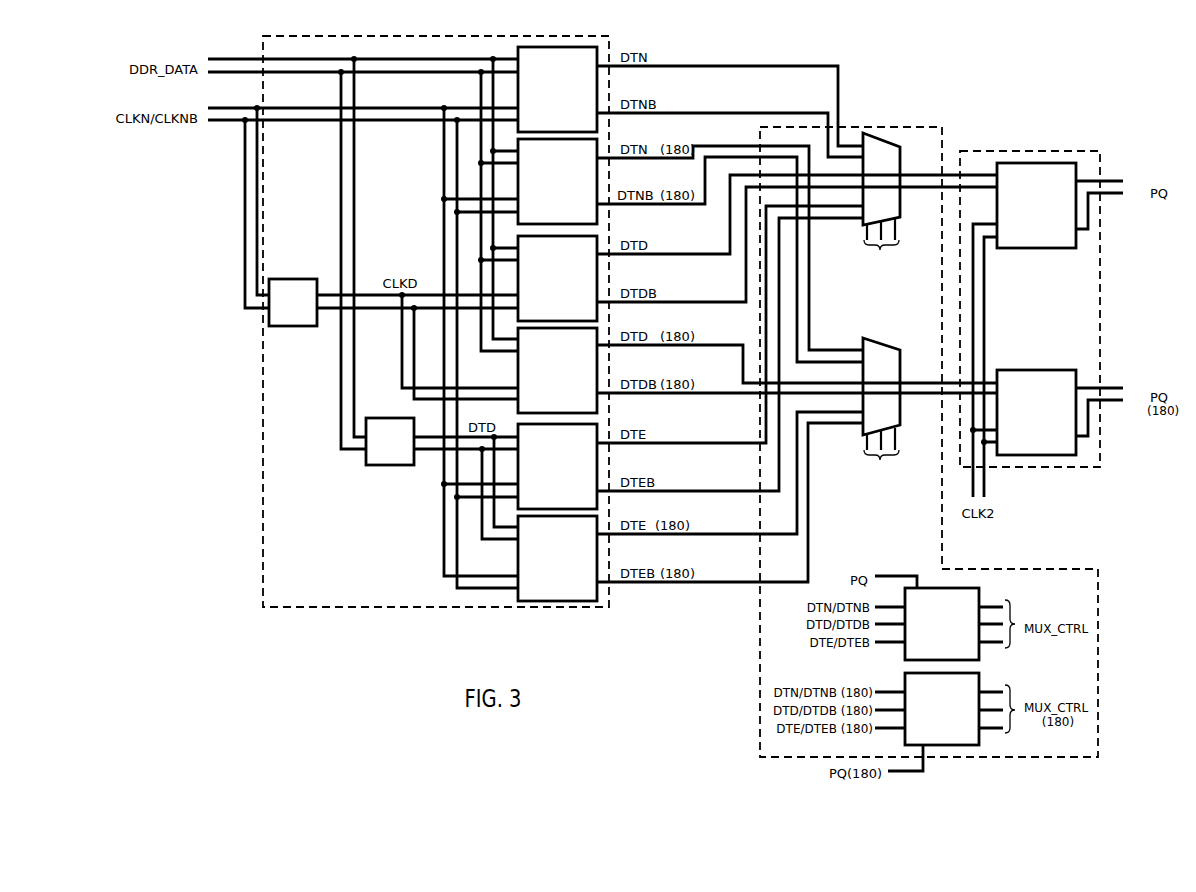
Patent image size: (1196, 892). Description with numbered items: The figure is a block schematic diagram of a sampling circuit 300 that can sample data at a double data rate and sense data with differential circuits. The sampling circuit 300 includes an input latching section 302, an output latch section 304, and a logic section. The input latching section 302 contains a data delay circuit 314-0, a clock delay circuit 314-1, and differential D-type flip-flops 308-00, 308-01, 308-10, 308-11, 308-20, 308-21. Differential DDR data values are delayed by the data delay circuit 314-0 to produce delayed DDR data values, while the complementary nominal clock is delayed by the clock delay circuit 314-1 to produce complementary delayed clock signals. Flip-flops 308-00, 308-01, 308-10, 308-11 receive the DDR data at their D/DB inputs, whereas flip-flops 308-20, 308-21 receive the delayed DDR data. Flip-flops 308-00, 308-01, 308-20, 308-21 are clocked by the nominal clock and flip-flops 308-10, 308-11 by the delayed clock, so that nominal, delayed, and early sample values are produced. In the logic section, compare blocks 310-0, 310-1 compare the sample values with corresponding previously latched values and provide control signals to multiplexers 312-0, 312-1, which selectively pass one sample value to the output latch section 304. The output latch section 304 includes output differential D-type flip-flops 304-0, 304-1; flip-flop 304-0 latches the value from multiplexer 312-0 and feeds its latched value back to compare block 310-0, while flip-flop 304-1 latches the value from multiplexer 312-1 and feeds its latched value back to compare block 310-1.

The sampling circuit 300 is at (1002, 69).
The input latching section 302 is at (263, 401).
The output latch section 304 is at (1033, 151).
The output differential D-type FF 304-0 is at (1036, 205).
The output differential D-type FF 304-1 is at (1036, 412).
The differential D-type FF 308-00 is at (557, 89).
The differential D-type FF 308-01 is at (557, 181).
The differential D-type FF 308-10 is at (557, 278).
The differential D-type FF 308-11 is at (557, 370).
The differential D-type FF 308-20 is at (557, 466).
The differential D-type FF 308-21 is at (557, 558).
The compare block 310-0 is at (960, 624).
The compare block 310-1 is at (960, 709).
The MUX 312-0 is at (881, 202).
The MUX 312-1 is at (881, 414).
The data delay circuit 314-0 is at (390, 441).
The clock delay circuit 314-1 is at (293, 302).